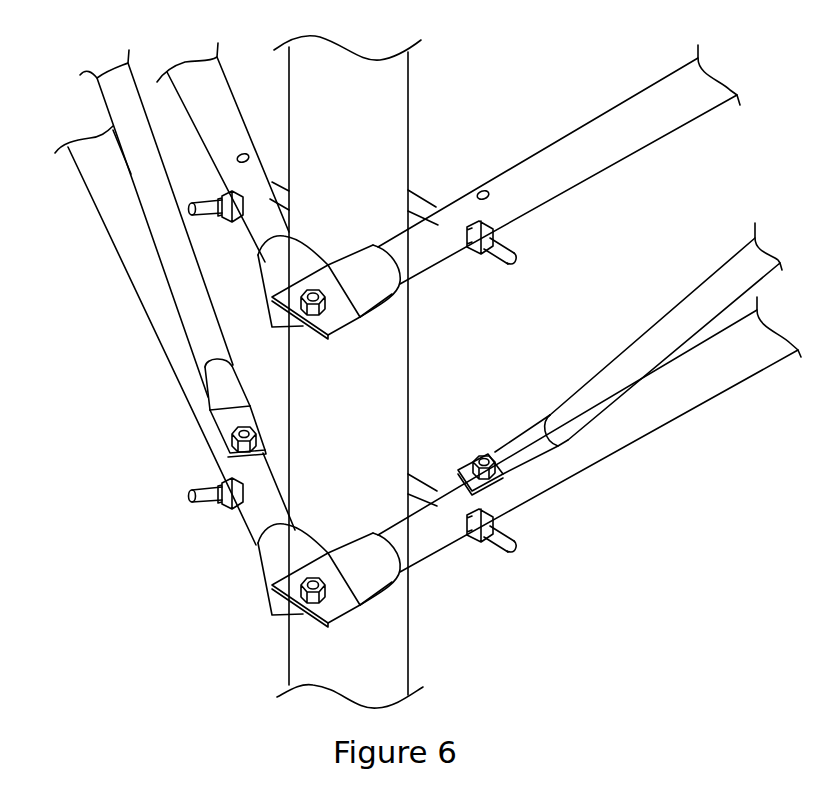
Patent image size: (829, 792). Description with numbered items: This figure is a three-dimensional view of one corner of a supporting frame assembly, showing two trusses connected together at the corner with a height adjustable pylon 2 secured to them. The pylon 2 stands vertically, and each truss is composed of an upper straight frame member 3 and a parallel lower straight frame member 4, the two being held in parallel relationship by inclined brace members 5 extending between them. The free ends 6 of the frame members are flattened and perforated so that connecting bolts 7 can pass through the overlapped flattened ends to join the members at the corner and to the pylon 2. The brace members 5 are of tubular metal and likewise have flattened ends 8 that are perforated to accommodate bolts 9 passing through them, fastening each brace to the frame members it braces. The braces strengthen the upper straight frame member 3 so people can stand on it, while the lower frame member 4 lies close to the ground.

The pylon 2 is at (390, 108).
The upper straight frame member 3 is at (210, 78).
The lower straight frame member 4 is at (141, 267).
The inclined brace member 5 is at (141, 160).
The free end 6 is at (337, 608).
The connecting bolt 7 is at (303, 585).
The flattened end 8 is at (527, 463).
The bolt 9 is at (483, 453).